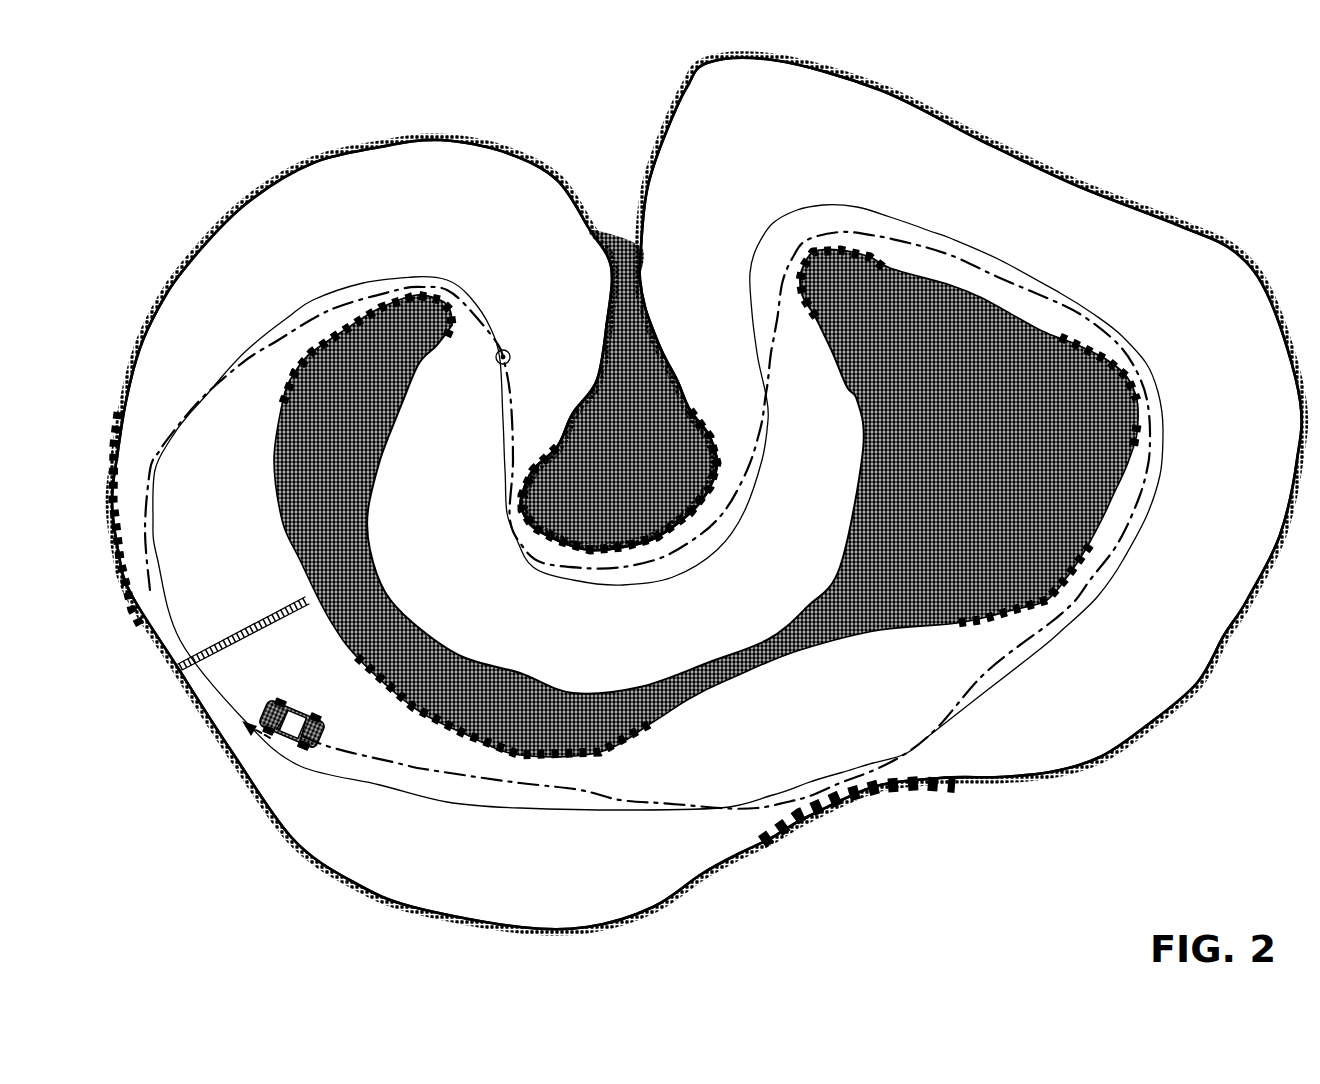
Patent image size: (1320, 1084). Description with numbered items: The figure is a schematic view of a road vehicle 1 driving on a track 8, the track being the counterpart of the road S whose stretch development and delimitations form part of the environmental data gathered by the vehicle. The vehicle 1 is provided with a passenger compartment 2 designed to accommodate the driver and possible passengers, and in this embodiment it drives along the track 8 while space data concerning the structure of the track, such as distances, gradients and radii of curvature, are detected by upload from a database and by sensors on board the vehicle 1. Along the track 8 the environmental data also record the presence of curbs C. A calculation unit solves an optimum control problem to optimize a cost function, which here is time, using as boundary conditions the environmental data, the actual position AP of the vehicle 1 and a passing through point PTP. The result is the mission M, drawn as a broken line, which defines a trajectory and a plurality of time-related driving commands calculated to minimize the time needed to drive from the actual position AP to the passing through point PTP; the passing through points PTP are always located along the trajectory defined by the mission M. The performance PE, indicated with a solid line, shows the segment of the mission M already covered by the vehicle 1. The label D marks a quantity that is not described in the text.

The track 8 is at (247, 203).
The road S is at (1043, 139).
The mission M is at (160, 443).
The performance PE is at (172, 470).
The curbs C is at (386, 337).
The road vehicle 1 is at (280, 757).
The passenger compartment 2 is at (296, 746).
The actual position AP is at (291, 700).
The passing through point PTP is at (510, 348).
The distance D is at (1127, 207).